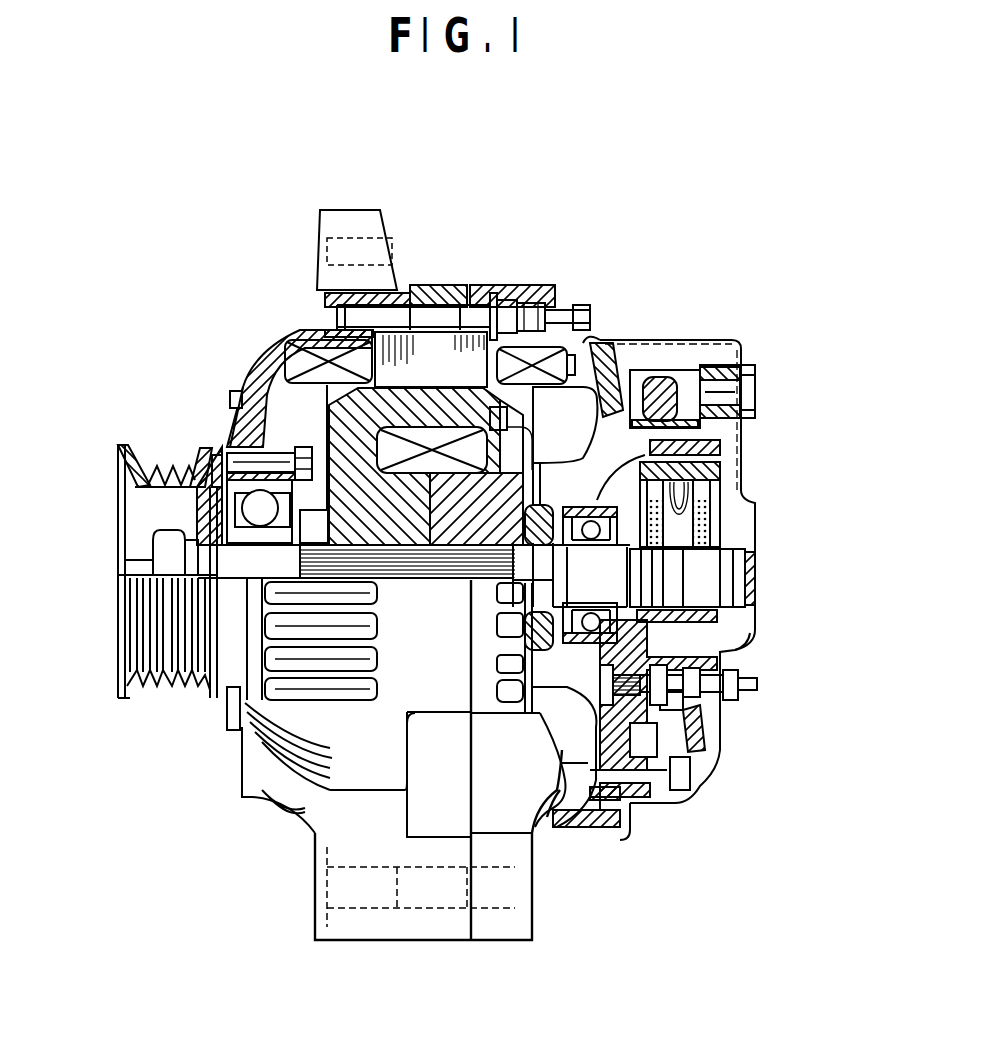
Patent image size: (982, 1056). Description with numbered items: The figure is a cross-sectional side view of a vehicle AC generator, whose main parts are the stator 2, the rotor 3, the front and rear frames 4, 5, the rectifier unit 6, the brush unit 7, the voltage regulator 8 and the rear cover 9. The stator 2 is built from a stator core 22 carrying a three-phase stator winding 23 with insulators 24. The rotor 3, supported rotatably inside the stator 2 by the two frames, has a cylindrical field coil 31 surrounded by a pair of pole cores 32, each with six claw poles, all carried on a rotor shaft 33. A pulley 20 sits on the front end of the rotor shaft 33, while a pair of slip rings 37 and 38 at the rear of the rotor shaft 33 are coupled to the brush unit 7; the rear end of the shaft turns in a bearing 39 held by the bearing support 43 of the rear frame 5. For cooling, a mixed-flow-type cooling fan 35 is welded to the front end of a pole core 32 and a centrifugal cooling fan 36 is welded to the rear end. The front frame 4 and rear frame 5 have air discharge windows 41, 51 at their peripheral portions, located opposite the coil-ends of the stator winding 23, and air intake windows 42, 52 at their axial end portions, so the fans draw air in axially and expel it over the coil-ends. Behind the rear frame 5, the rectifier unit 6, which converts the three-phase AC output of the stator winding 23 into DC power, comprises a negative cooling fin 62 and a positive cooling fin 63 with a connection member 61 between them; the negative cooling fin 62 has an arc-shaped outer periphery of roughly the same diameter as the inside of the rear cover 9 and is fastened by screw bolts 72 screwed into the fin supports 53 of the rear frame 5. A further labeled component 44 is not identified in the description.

The stator 2 is at (440, 433).
The rotor 3 is at (445, 342).
The front frame 4 is at (352, 927).
The rear frame 5 is at (500, 928).
The rectifier unit 6 is at (713, 735).
The brush unit 7 is at (722, 478).
The voltage regulator 8 is at (757, 366).
The rear cover 9 is at (757, 594).
The pulley 20 is at (118, 690).
The stator core 22 is at (420, 387).
The three-phase stator winding 23 is at (327, 350).
The insulators 24 is at (455, 392).
The cylindrical field coil 31 is at (500, 327).
The pole core 32 is at (262, 348).
The rotor shaft 33 is at (213, 452).
The mixed-flow-type cooling fan 35 is at (245, 378).
The centrifugal cooling fan 36 is at (570, 417).
The slip ring 37 is at (663, 567).
The slip ring 38 is at (713, 567).
The bearing 39 is at (720, 448).
The air discharge window 41 is at (313, 688).
The air intake window 42 is at (226, 690).
The bearing support 43 is at (545, 645).
The output terminal bolt 44 is at (758, 682).
The air discharge window 51 is at (517, 693).
The air intake window 52 is at (662, 380).
The fin support 53 is at (630, 812).
The connection member 61 is at (705, 720).
The negative cooling fin 62 is at (680, 790).
The positive cooling fin 63 is at (740, 641).
The screw bolt 72 is at (692, 775).